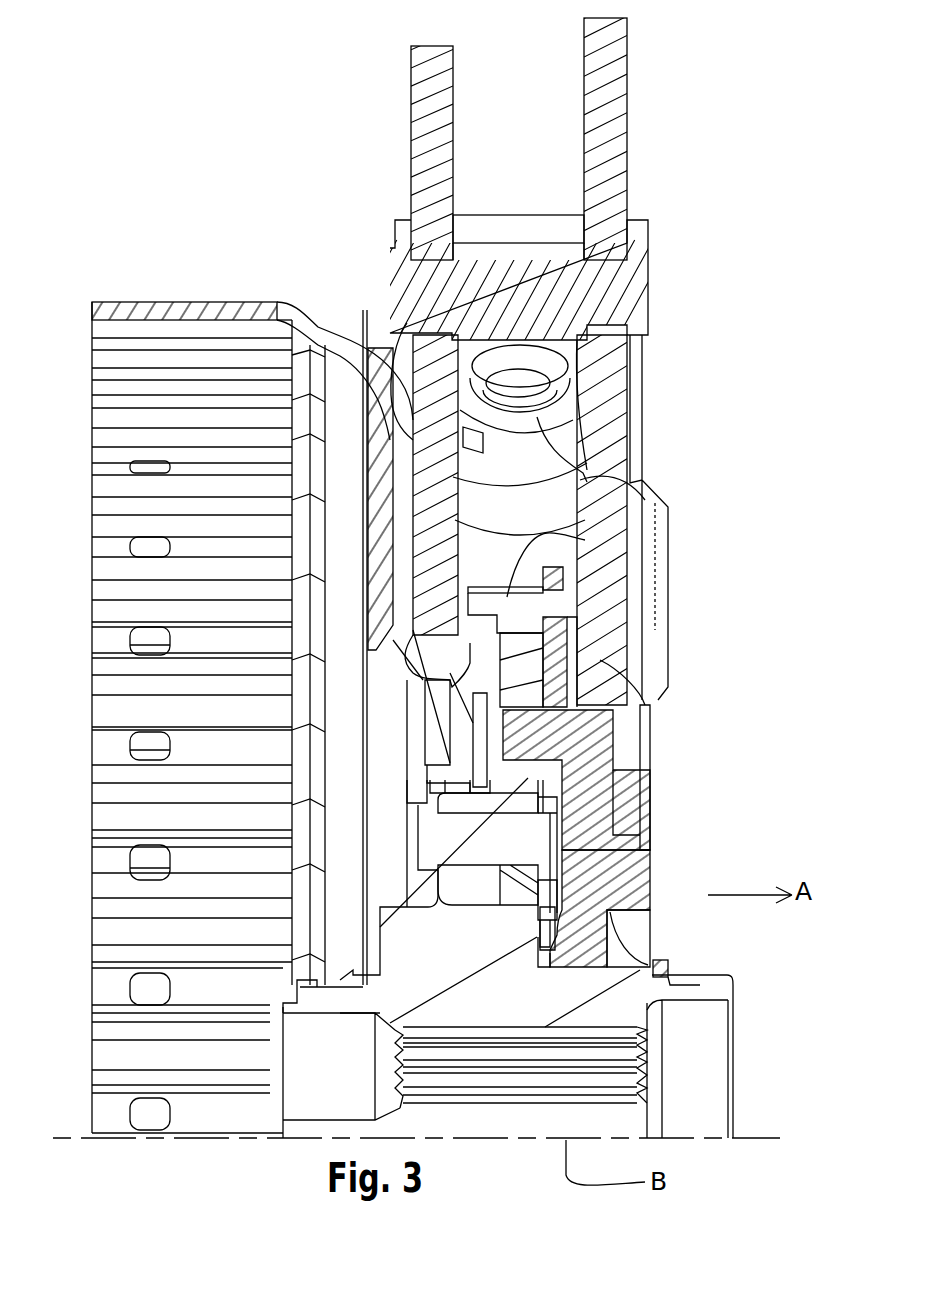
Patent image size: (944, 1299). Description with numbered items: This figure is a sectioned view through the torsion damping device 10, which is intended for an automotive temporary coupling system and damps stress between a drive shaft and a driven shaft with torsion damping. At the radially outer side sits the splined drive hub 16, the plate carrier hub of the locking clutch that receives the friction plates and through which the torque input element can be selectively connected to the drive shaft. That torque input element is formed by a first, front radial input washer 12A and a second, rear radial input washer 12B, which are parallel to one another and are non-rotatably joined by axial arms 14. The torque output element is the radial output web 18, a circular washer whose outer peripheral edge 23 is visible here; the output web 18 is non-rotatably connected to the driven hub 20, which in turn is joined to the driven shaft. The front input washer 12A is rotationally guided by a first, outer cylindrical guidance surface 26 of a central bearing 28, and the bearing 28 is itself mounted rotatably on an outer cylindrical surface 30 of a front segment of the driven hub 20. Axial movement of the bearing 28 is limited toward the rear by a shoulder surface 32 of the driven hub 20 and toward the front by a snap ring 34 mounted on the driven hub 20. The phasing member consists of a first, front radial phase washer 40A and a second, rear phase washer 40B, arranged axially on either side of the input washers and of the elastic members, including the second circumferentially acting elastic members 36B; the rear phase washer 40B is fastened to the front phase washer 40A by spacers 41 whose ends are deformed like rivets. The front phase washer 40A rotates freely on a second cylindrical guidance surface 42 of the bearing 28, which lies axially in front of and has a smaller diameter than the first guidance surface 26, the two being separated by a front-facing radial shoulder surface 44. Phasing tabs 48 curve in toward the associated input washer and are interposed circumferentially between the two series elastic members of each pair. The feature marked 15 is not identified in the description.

The torsion damping device 10 is at (250, 117).
The splined drive hub 16 is at (180, 300).
The second circumferentially acting elastic members 36B is at (613, 453).
The spacers 41 is at (573, 293).
The second rear radial phase washer 40B is at (441, 427).
The phasing tabs 48 is at (440, 390).
The first front radial phase washer 40A is at (604, 374).
The axial arms 14 is at (590, 543).
The outer peripheral edge 23 is at (620, 605).
The first front radial input washer 12A is at (580, 647).
The radial output web 18 is at (590, 665).
The first outer cylindrical guidance surface 26 is at (633, 700).
The front-facing radial shoulder surface 44 is at (620, 733).
The second rear radial input washer 12B is at (600, 762).
The second cylindrical guidance surface 42 is at (647, 823).
The hub 15 is at (513, 830).
The central bearing 28 is at (628, 865).
The shoulder surface 32 is at (565, 908).
The outer cylindrical surface 30 is at (643, 957).
The snap ring 34 is at (668, 967).
The driven hub 20 is at (612, 1003).